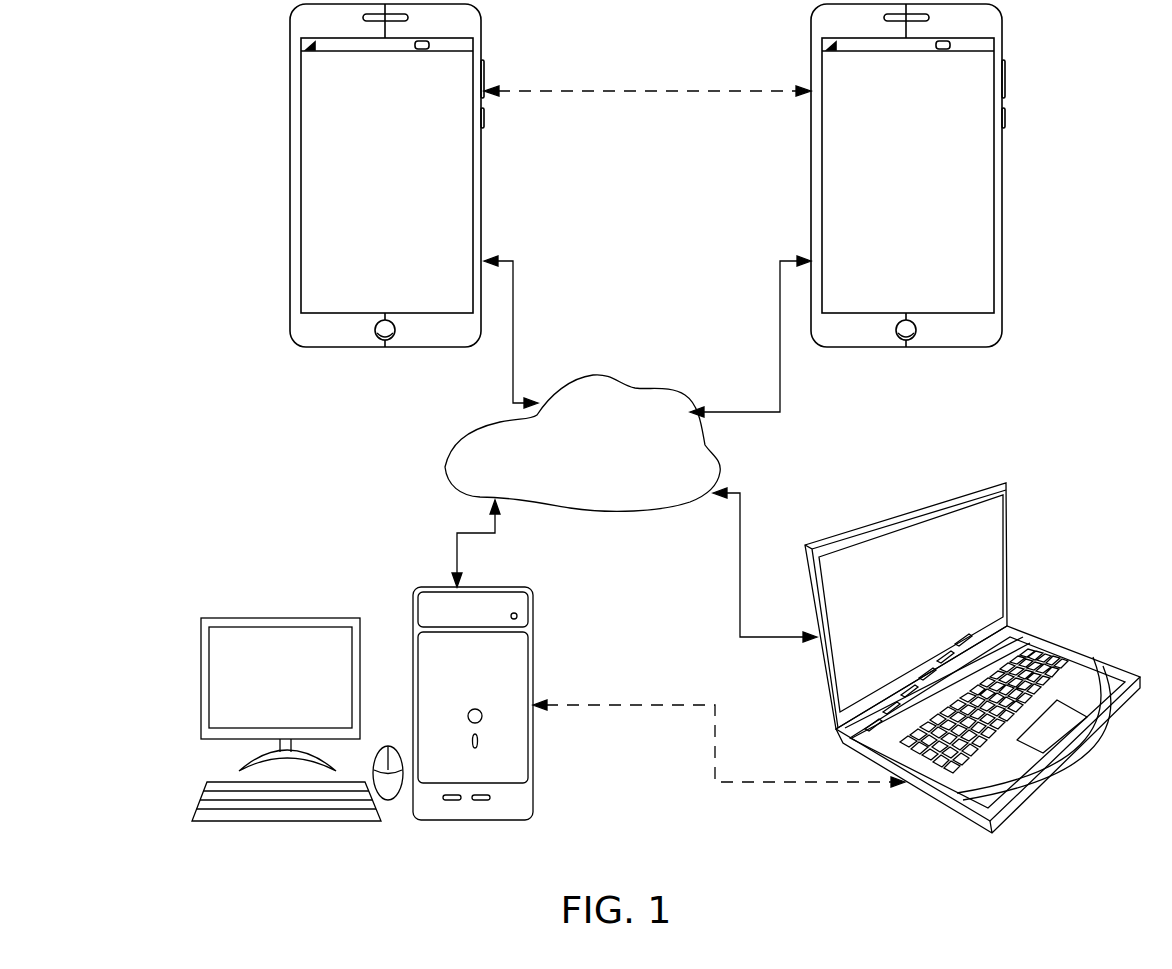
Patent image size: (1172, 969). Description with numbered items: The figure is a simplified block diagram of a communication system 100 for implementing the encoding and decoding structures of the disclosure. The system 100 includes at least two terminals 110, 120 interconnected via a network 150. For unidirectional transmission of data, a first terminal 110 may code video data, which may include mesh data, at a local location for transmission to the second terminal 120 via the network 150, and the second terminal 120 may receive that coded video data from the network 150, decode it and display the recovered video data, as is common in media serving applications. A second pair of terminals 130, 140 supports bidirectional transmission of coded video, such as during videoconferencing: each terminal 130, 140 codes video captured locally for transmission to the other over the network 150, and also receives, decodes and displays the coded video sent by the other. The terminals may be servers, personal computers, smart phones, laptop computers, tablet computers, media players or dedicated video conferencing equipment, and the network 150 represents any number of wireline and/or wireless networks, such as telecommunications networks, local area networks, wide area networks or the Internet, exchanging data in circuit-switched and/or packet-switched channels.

The communication system 100 is at (202, 61).
The first terminal 110 is at (1007, 533).
The second terminal 120 is at (533, 788).
The terminal 130 is at (354, 175).
The terminal 140 is at (811, 117).
The network 150 is at (582, 443).